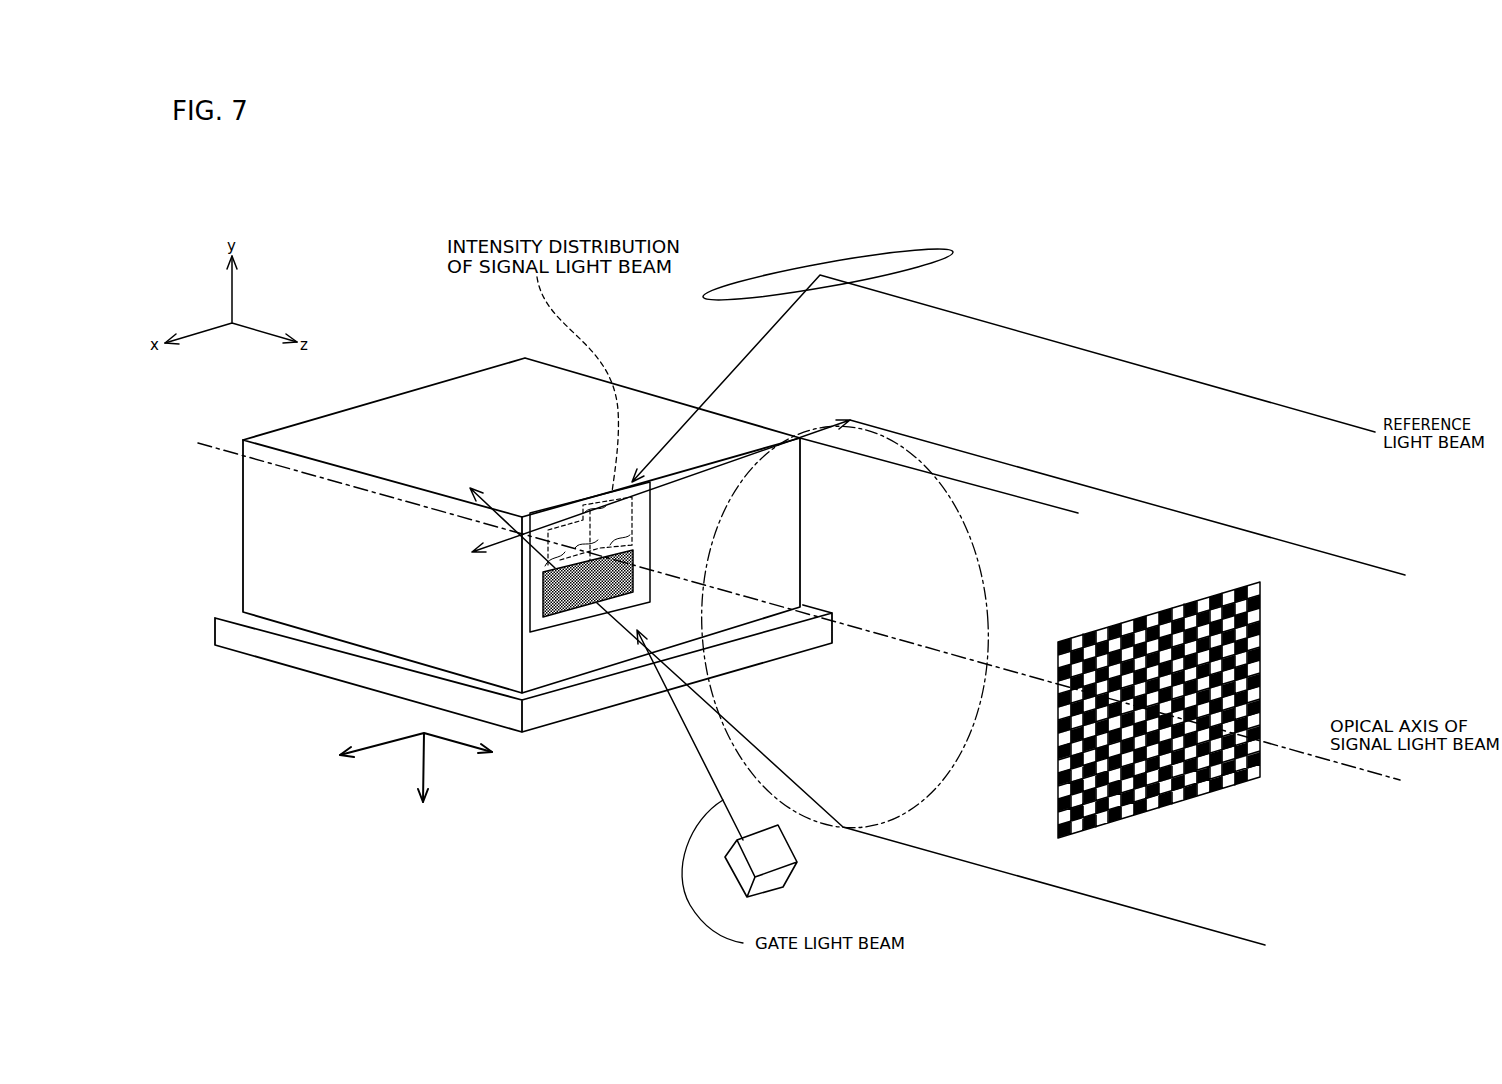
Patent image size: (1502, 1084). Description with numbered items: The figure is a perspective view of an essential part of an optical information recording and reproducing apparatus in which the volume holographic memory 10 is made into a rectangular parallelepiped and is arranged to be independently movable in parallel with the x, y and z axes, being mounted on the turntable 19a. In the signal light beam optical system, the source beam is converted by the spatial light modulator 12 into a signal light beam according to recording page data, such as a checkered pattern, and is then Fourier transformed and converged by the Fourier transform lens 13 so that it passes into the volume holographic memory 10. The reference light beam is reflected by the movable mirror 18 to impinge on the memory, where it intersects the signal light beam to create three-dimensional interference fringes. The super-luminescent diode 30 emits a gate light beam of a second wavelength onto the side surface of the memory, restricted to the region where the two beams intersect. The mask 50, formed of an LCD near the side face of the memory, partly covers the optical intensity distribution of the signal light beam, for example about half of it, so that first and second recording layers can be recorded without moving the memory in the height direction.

The volume holographic memory 10 is at (460, 388).
The spatial light modulator 12 is at (1248, 783).
The Fourier transform lens 13 is at (880, 824).
The movable mirror 18 is at (952, 252).
The turntable 19a is at (275, 650).
The super-luminescent diode 30 is at (780, 855).
The mask 50 is at (533, 580).